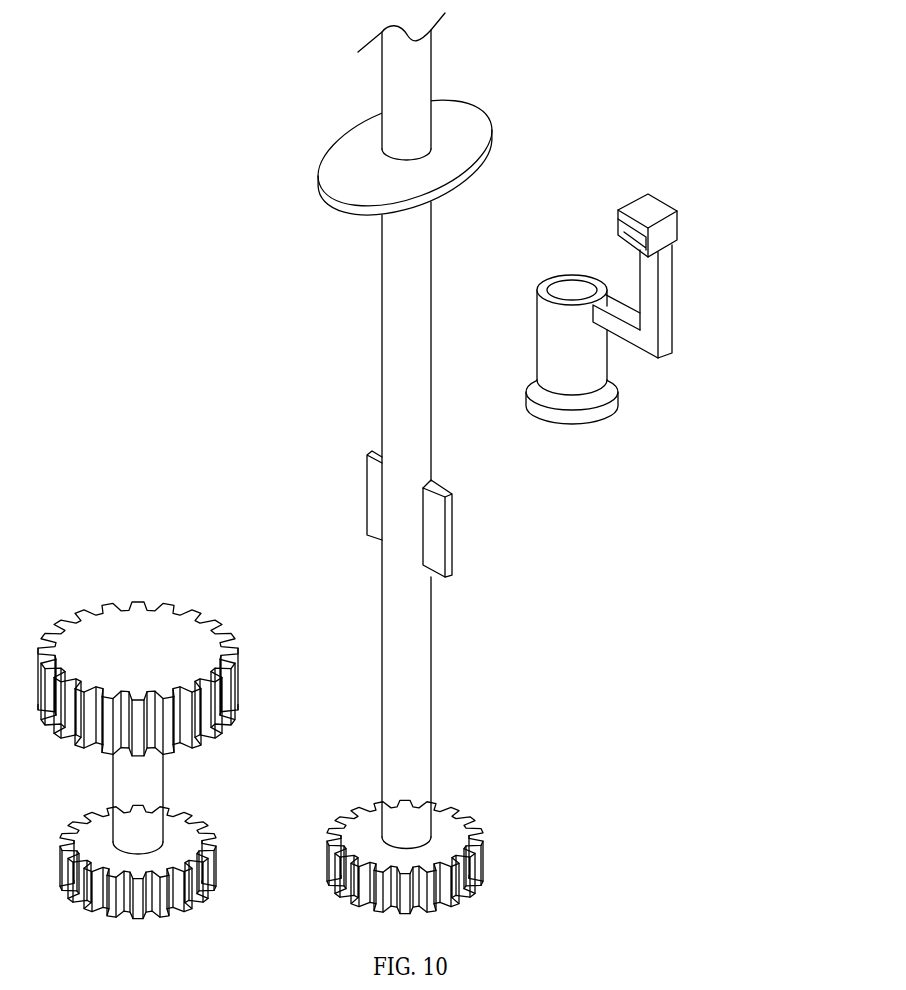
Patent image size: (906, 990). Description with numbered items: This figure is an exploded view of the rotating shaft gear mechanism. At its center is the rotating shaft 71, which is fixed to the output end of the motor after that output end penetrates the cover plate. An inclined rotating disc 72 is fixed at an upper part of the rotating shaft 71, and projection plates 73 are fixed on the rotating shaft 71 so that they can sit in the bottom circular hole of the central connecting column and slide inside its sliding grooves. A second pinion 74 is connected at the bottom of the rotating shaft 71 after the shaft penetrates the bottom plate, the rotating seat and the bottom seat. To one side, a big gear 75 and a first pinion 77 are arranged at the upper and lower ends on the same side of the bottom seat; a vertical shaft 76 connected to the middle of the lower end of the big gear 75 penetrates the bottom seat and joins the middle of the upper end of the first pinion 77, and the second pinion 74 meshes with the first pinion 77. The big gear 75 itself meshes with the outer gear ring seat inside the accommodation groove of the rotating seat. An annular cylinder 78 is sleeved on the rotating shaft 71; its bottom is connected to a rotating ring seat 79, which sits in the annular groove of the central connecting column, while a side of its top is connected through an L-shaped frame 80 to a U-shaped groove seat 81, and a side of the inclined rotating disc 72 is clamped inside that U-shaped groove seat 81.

The rotating shaft 71 is at (431, 690).
The inclined rotating disc 72 is at (368, 190).
The projection plate 73 is at (437, 528).
The second pinion 74 is at (478, 878).
The big gear 75 is at (197, 642).
The vertical shaft 76 is at (153, 783).
The first pinion 77 is at (203, 887).
The annular cylinder 78 is at (565, 330).
The rotating ring seat 79 is at (565, 415).
The L-shaped frame 80 is at (662, 298).
The U-shaped groove seat 81 is at (633, 232).